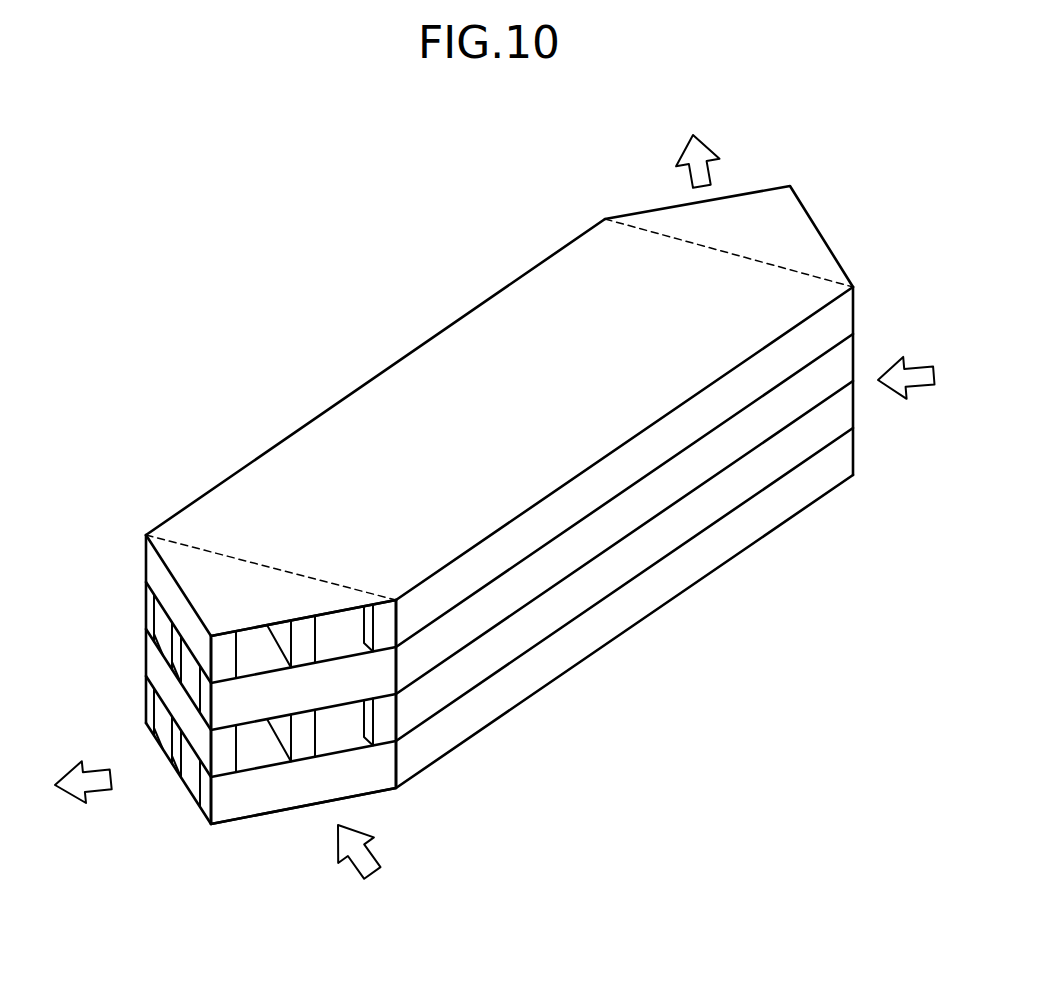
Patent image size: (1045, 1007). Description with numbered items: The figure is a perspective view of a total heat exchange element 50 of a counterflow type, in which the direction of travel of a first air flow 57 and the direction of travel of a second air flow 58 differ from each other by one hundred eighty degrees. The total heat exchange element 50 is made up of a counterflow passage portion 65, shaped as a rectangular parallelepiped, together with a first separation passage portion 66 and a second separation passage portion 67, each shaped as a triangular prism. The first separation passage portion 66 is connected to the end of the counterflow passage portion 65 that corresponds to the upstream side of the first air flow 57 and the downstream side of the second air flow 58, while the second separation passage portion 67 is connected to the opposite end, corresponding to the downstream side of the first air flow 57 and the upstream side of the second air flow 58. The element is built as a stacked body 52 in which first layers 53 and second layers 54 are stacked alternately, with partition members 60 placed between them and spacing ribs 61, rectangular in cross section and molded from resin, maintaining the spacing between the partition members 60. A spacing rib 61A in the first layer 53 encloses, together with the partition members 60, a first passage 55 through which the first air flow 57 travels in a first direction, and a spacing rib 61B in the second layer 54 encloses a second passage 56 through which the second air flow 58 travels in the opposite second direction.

The total heat exchange element 50 is at (282, 272).
The stacked body 52 is at (102, 532).
The first layer 53 is at (863, 312).
The second layer 54 is at (137, 605).
The first passage 55 is at (337, 733).
The second passage 56 is at (165, 742).
The first air flow 57 is at (711, 172).
The second air flow 58 is at (92, 763).
The partition member 60 is at (345, 658).
The spacing rib 61 is at (295, 898).
The spacing rib 61A is at (307, 740).
The spacing rib 61B is at (178, 742).
The counterflow passage portion 65 is at (600, 248).
The first separation passage portion 66 is at (178, 558).
The second separation passage portion 67 is at (675, 220).